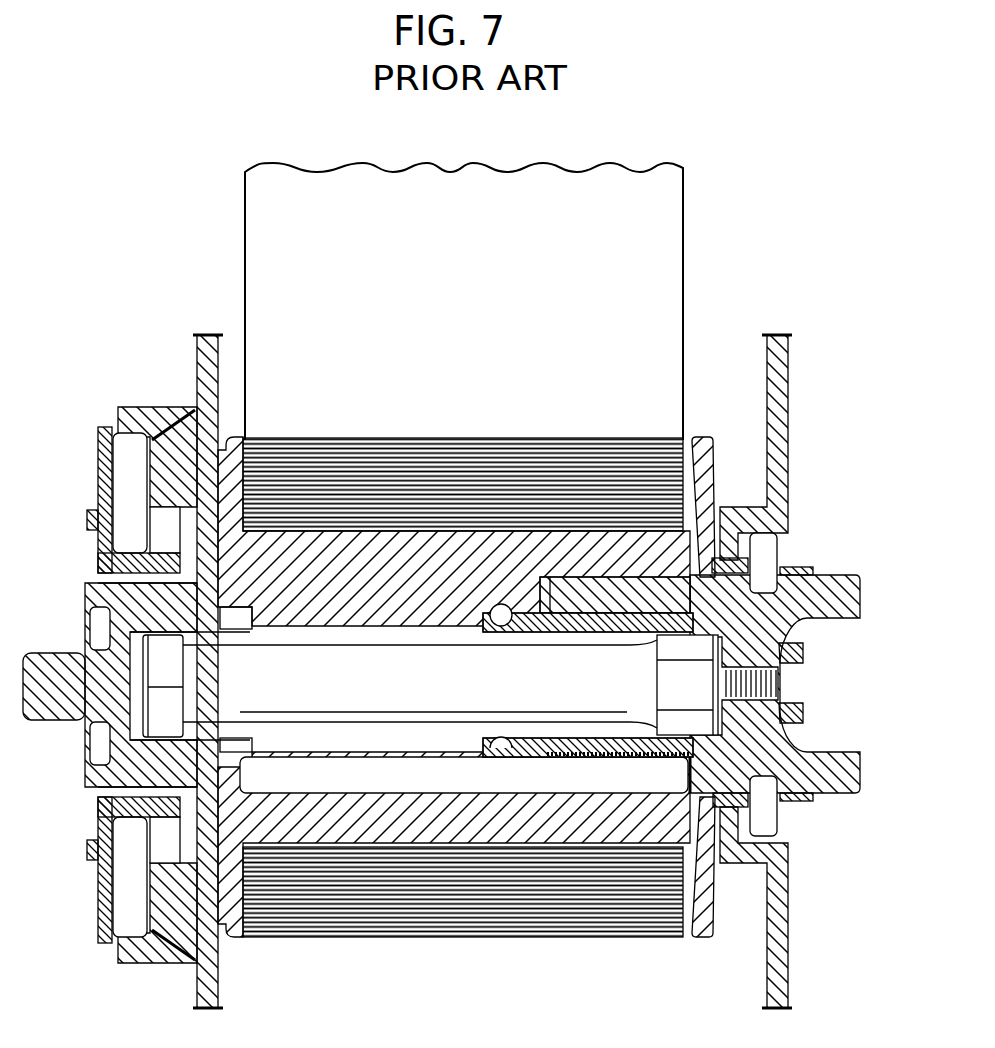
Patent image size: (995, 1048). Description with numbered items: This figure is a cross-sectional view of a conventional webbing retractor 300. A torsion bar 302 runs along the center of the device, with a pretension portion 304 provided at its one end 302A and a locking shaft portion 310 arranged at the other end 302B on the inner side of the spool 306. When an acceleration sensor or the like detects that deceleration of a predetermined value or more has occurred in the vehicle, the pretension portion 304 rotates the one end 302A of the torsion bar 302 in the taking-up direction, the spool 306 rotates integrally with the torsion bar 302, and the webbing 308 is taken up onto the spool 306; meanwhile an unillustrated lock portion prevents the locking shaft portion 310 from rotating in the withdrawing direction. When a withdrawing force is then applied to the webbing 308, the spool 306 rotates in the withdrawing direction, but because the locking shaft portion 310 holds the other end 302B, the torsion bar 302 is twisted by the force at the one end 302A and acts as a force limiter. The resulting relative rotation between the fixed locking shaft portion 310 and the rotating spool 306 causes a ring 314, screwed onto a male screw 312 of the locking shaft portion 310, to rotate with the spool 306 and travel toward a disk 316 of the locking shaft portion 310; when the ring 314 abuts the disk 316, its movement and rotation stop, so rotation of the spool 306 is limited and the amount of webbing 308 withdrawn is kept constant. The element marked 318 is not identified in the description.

The webbing retractor 300 is at (749, 250).
The torsion bar 302 is at (424, 715).
The one end of the torsion bar 302A is at (180, 676).
The other end of the torsion bar 302B is at (678, 689).
The pretension portion 304 is at (72, 742).
The spool 306 is at (697, 934).
The webbing 308 is at (248, 210).
The locking shaft portion 310 is at (856, 573).
The male screw 312 is at (615, 609).
The ring 314 is at (593, 592).
The disk 316 is at (716, 577).
The washer / ball 318 is at (549, 634).